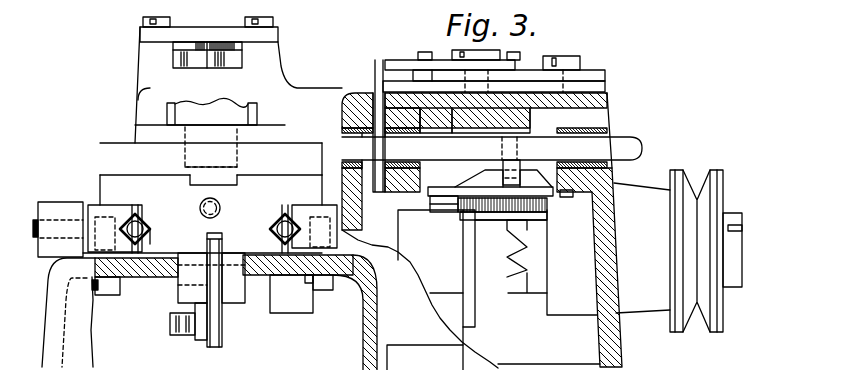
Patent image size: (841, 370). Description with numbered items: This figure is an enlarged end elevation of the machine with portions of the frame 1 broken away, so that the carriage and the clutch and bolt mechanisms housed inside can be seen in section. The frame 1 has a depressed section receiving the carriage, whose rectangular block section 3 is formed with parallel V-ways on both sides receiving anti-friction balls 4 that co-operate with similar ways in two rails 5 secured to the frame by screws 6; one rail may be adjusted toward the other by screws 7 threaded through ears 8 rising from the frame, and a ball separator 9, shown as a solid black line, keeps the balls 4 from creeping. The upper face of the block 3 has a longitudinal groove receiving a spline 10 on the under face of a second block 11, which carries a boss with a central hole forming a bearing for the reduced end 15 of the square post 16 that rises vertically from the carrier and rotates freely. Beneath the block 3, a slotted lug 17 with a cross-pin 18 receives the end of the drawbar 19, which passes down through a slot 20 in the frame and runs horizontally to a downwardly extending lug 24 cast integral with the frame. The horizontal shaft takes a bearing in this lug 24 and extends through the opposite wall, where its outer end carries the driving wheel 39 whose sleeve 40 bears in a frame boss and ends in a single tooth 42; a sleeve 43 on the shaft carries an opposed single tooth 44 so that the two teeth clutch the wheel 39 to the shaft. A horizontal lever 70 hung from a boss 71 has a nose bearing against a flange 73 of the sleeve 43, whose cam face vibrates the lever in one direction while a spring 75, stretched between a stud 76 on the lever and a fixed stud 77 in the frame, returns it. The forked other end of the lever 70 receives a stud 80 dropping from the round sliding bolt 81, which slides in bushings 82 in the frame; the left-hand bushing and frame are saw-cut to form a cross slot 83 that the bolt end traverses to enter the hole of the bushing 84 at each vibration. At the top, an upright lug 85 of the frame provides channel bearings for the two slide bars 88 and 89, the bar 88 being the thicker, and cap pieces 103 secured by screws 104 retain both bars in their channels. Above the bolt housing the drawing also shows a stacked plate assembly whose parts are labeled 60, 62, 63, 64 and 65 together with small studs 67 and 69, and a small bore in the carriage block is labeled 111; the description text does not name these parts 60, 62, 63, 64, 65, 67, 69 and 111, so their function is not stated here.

The frame 1 is at (399, 256).
The rectangular block section 3 is at (202, 214).
The anti-friction balls 4 is at (148, 224).
The rails 5 is at (95, 206).
The screws 6 is at (214, 297).
The screws 7 is at (33, 226).
The ears 8 is at (63, 203).
The ball separator 9 is at (143, 239).
The spline 10 is at (211, 176).
The second block 11 is at (211, 159).
The reduced end 15 is at (200, 126).
The post 16 is at (212, 112).
The lug 17 is at (180, 297).
The cross-pin 18 is at (232, 283).
The drawbar 19 is at (223, 342).
The slot 20 is at (177, 277).
The lug or ear 24 is at (297, 313).
The driving wheel 39 is at (690, 176).
The sleeve 40 is at (540, 287).
The single tooth 42 is at (527, 268).
The sleeve 43 is at (430, 251).
The single tooth 44 is at (512, 247).
The top plate 60 is at (398, 61).
The plate 62 is at (598, 72).
The plate 63 is at (606, 87).
The base plate 64 is at (393, 88).
The block 65 is at (571, 57).
The stud 67 is at (423, 52).
The stud 69 is at (516, 62).
The lever 70 is at (447, 187).
The boss 71 is at (491, 120).
The flange 73 is at (474, 320).
The spring 75 is at (498, 214).
The stud 76 is at (438, 202).
The fixed stud 77 is at (574, 198).
The stud 80 is at (515, 168).
The sliding bolt 81 is at (492, 149).
The bushings 82 is at (618, 118).
The cross slot 83 is at (378, 193).
The bushing 84 is at (343, 127).
The upright lug 85 is at (137, 69).
The slide bar 88 is at (240, 58).
The slide bar 89 is at (243, 44).
The cap pieces 103 is at (140, 34).
The screws 104 is at (143, 20).
The bore 111 is at (202, 214).